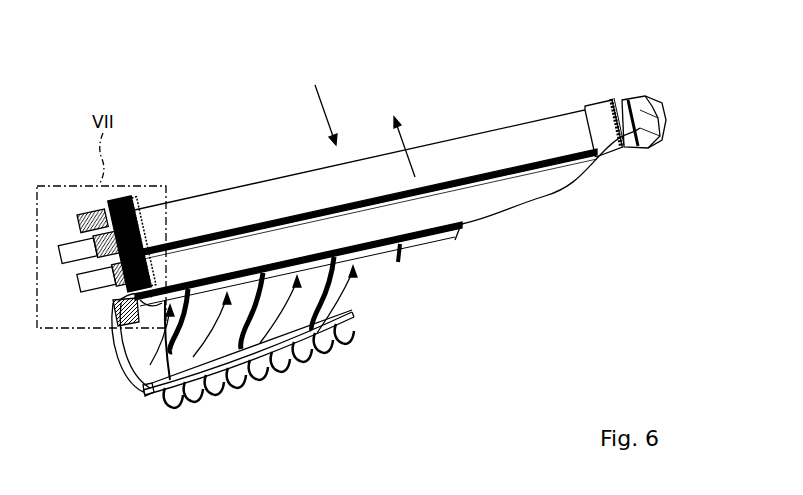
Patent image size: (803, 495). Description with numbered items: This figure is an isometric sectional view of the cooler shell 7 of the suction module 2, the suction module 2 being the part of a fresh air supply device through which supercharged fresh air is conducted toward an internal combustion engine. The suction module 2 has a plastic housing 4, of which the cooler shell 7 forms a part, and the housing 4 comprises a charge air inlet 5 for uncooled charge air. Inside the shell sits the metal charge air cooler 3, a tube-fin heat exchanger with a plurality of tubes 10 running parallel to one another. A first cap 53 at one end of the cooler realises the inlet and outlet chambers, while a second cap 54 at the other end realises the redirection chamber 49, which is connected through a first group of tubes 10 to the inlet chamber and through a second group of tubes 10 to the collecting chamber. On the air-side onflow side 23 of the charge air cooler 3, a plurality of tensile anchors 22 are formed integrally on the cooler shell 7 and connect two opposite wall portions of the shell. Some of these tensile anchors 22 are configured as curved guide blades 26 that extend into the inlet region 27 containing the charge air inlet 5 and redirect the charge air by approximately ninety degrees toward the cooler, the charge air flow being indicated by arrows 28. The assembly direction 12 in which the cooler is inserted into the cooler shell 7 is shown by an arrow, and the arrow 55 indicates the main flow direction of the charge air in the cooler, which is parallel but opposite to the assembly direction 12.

The suction module 2 is at (88, 213).
The housing 4 is at (61, 166).
The first cap 53 is at (116, 210).
The inlet region 27 is at (220, 247).
The tensile anchors 22 is at (195, 321).
The onflow side 23 is at (434, 252).
The arrows 28 is at (340, 306).
The guide blade 26 is at (180, 392).
The cooler shell 7 is at (202, 398).
The charge air inlet 5 is at (117, 362).
The assembly direction 12 is at (329, 108).
The arrow 55 is at (408, 138).
The tubes 10 is at (492, 143).
The charge air cooler 3 is at (547, 114).
The second cap 54 is at (618, 100).
The redirection chamber 49 is at (640, 132).